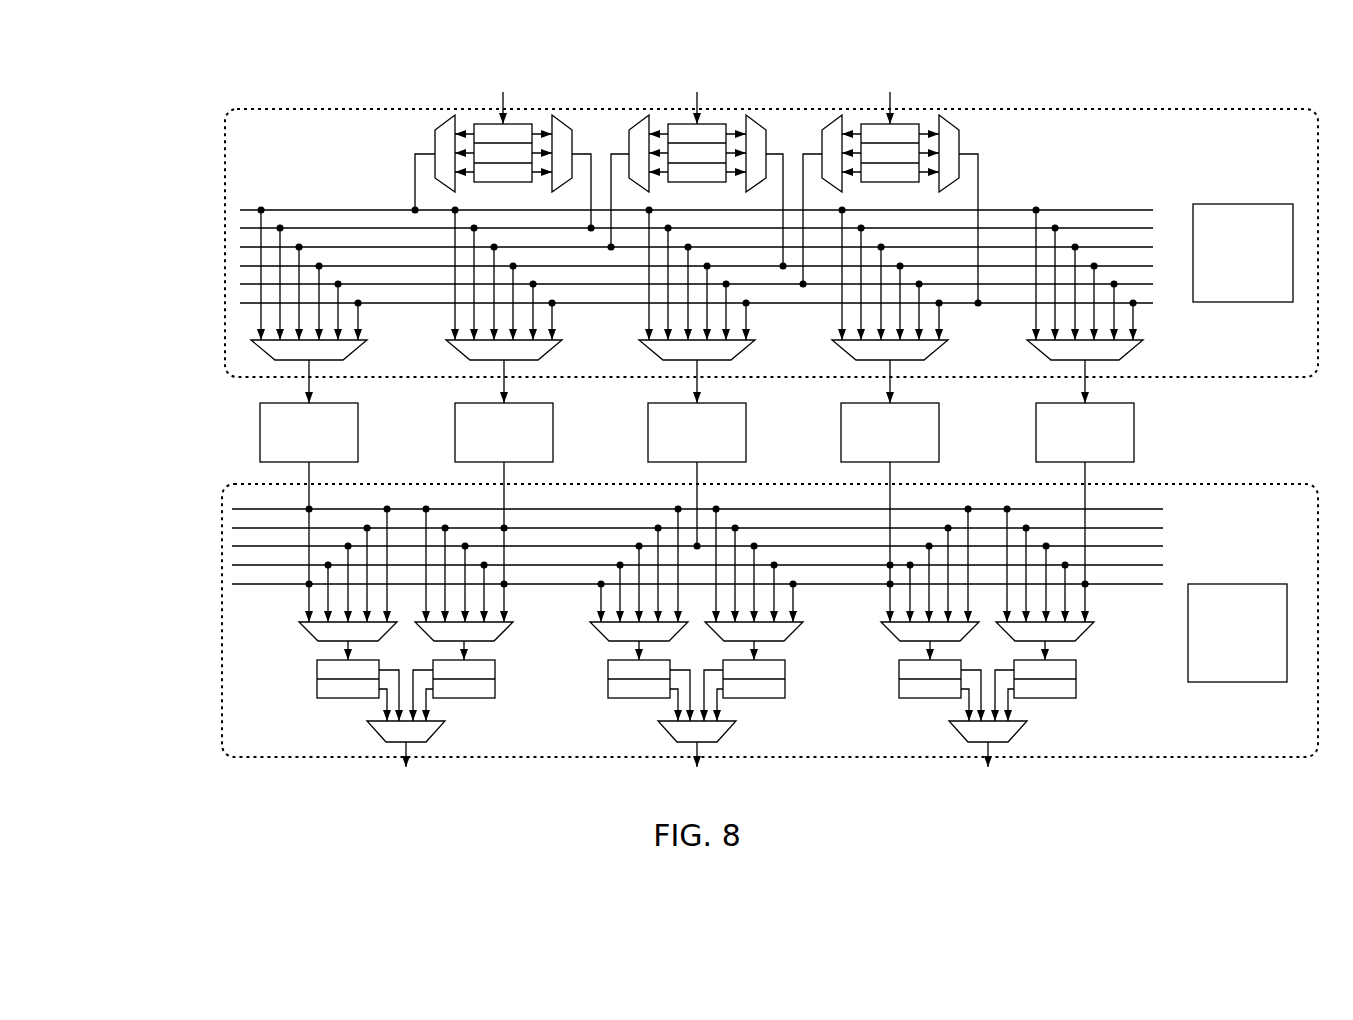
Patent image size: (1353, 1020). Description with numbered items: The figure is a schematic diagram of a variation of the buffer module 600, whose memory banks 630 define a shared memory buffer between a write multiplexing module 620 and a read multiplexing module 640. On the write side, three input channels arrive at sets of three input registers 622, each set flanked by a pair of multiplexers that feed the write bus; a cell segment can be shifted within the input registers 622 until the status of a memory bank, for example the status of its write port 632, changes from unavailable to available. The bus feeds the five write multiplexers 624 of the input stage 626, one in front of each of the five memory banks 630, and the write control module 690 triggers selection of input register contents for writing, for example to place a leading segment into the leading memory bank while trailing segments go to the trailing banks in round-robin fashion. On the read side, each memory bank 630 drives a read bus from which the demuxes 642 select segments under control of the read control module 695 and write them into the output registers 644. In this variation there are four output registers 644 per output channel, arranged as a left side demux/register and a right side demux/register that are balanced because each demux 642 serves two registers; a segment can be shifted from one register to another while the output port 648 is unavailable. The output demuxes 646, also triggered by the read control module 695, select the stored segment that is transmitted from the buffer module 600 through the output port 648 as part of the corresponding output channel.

The buffer module 600 is at (158, 111).
The write multiplexing module 620 is at (225, 230).
The input registers 622 is at (658, 118).
The write multiplexer 624 is at (236, 350).
The input register stage 626 is at (408, 66).
The memory banks 630 is at (240, 450).
The write port 632 is at (322, 397).
The read multiplexing module 640 is at (222, 578).
The demuxes 642 is at (248, 630).
The output registers 644 is at (250, 681).
The output demuxes 646 is at (348, 729).
The output port 648 is at (680, 750).
The write control module 690 is at (1243, 253).
The read control module 695 is at (1237, 633).